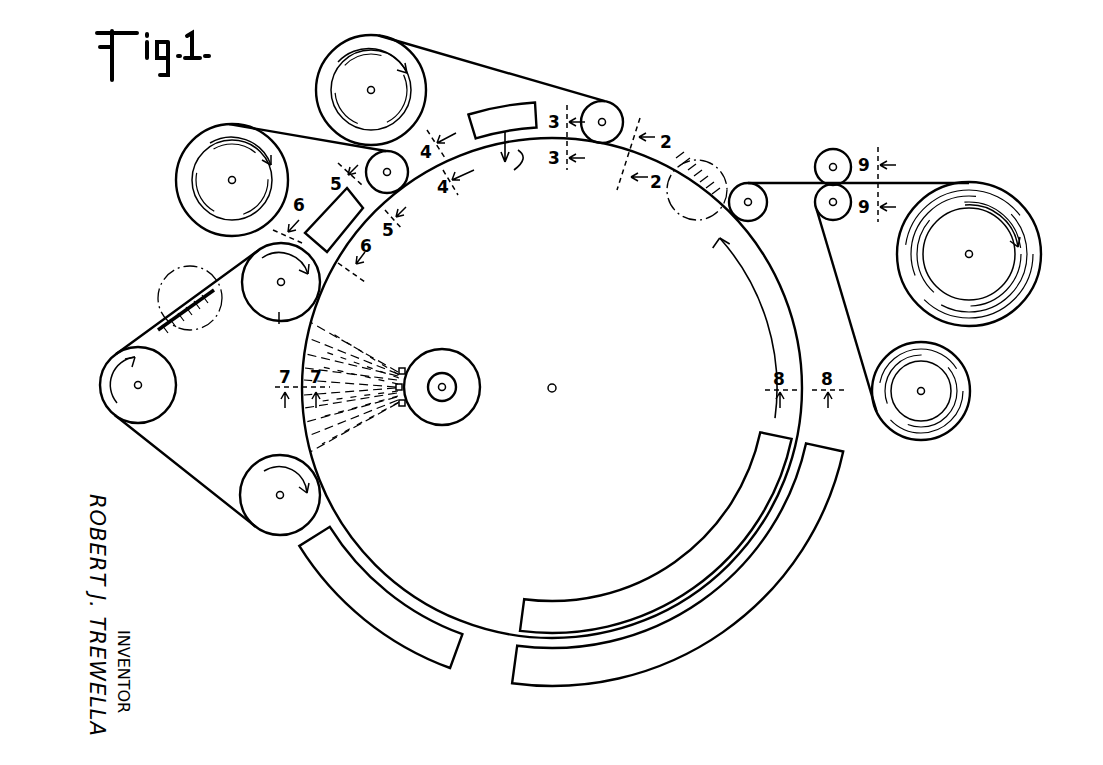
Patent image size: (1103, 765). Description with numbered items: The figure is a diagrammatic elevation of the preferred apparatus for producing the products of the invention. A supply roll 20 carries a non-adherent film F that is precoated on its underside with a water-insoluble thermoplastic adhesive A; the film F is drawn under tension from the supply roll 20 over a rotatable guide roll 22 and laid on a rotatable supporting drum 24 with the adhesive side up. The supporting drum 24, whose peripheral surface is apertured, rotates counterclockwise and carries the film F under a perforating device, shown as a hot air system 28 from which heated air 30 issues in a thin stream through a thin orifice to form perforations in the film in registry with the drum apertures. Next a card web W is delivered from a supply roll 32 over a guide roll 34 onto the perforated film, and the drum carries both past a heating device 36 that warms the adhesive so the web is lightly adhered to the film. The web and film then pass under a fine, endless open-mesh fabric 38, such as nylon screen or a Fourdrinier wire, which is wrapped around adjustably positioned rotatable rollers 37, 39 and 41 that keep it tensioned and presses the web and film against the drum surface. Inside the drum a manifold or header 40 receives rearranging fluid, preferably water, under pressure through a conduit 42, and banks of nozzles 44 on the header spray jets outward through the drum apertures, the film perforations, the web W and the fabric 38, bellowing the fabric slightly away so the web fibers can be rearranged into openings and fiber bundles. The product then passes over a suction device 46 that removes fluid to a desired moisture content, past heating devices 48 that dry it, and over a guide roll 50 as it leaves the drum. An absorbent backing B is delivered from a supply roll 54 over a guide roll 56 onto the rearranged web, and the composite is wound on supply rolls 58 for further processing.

The supply roll 20 is at (337, 62).
The thermoplastic adhesive A is at (498, 73).
The non-adherent film F is at (572, 86).
The guide roll 22 is at (620, 106).
The supporting drum 24 is at (412, 597).
The hot air system 28 is at (513, 108).
The heated air 30 is at (514, 163).
The supply roll 32 is at (187, 146).
The card web W is at (285, 128).
The guide roll 34 is at (404, 188).
The heating device 36 is at (306, 162).
The open-mesh fabric 38 is at (158, 308).
The rotatable roller 39 is at (278, 318).
The rotatable roller 37 is at (168, 390).
The rotatable roller 41 is at (260, 471).
The header 40 is at (468, 416).
The conduit 42 is at (478, 330).
The nozzles 44 is at (410, 354).
The suction device 46 is at (378, 634).
The heating devices 48 is at (704, 541).
The guide roll 50 is at (772, 204).
The guide roll 56 is at (842, 150).
The supply rolls 58 is at (1012, 216).
The backing web B is at (838, 282).
The supply roll 54 is at (969, 403).